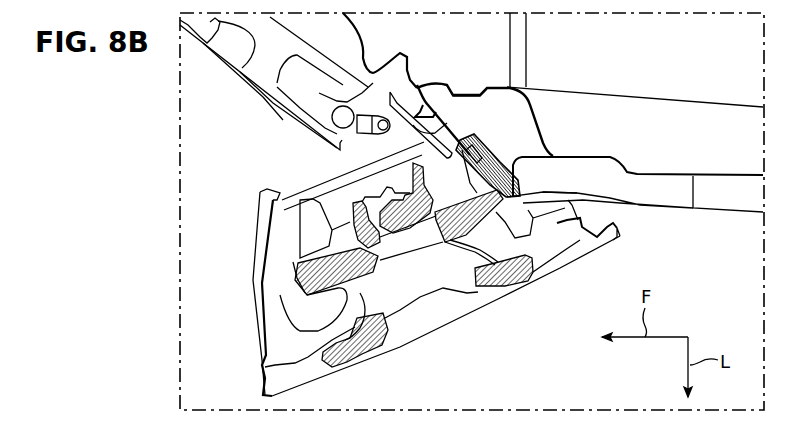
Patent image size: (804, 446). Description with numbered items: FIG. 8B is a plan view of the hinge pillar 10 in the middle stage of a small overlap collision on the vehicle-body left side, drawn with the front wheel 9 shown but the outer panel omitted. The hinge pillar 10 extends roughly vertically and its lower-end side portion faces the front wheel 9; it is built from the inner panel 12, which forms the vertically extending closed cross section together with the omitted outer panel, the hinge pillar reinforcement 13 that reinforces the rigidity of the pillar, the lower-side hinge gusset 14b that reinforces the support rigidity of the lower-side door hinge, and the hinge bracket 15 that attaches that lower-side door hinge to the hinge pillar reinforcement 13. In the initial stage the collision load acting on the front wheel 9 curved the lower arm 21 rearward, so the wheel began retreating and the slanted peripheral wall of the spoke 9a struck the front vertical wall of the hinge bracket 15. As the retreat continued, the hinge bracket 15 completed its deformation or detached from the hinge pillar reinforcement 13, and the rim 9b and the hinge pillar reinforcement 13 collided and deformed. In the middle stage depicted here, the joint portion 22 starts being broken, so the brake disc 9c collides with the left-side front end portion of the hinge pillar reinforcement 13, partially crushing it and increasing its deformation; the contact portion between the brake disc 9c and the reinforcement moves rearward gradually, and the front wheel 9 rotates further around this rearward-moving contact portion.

The front wheel 9 is at (431, 334).
The spoke 9a is at (594, 238).
The rim 9b is at (577, 216).
The brake disc 9c is at (309, 273).
The hinge pillar 10 is at (545, 101).
The inner panel 12 is at (465, 93).
The hinge pillar reinforcement 13 is at (455, 119).
The lower-side hinge gusset 14b is at (478, 146).
The hinge bracket 15 is at (488, 174).
The lower arm 21 is at (261, 77).
The joint portion 22 is at (345, 103).